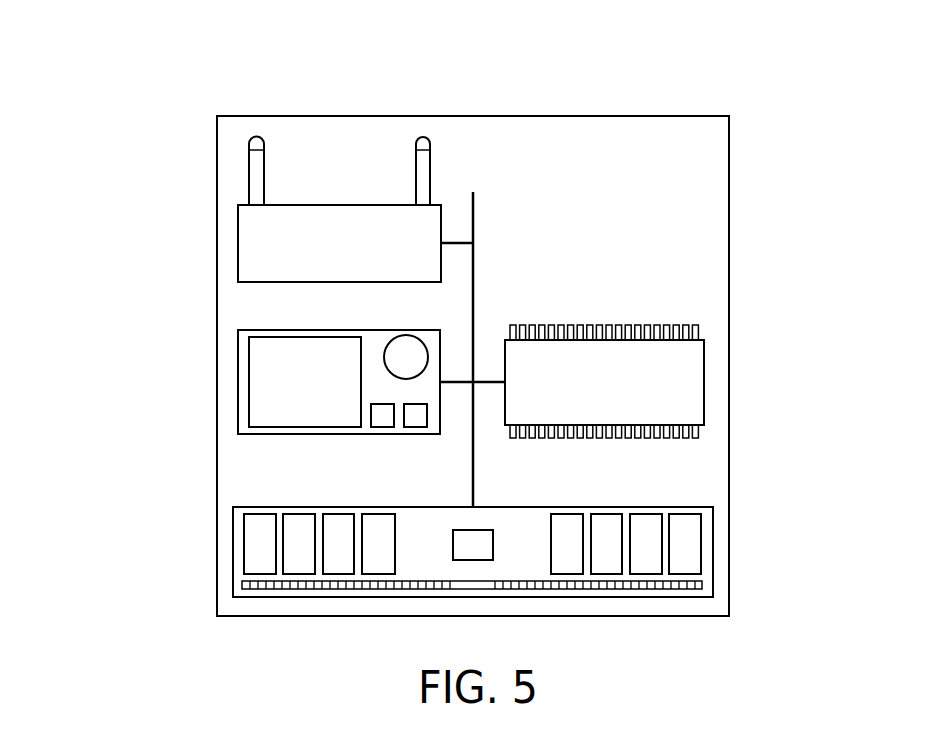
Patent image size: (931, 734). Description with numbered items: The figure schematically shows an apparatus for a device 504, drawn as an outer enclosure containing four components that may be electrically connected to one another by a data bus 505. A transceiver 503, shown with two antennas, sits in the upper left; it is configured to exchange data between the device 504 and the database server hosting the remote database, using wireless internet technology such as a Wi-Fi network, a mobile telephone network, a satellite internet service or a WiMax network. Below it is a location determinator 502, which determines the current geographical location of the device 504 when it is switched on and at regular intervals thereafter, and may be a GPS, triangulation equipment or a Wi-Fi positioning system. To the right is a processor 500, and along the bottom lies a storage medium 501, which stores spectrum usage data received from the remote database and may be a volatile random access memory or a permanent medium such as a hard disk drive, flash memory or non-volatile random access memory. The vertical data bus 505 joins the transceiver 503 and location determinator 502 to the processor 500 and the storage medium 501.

The processor 500 is at (683, 372).
The storage medium 501 is at (705, 558).
The location determinator 502 is at (280, 382).
The transceiver 503 is at (265, 240).
The device 504 is at (683, 190).
The data bus 505 is at (474, 210).